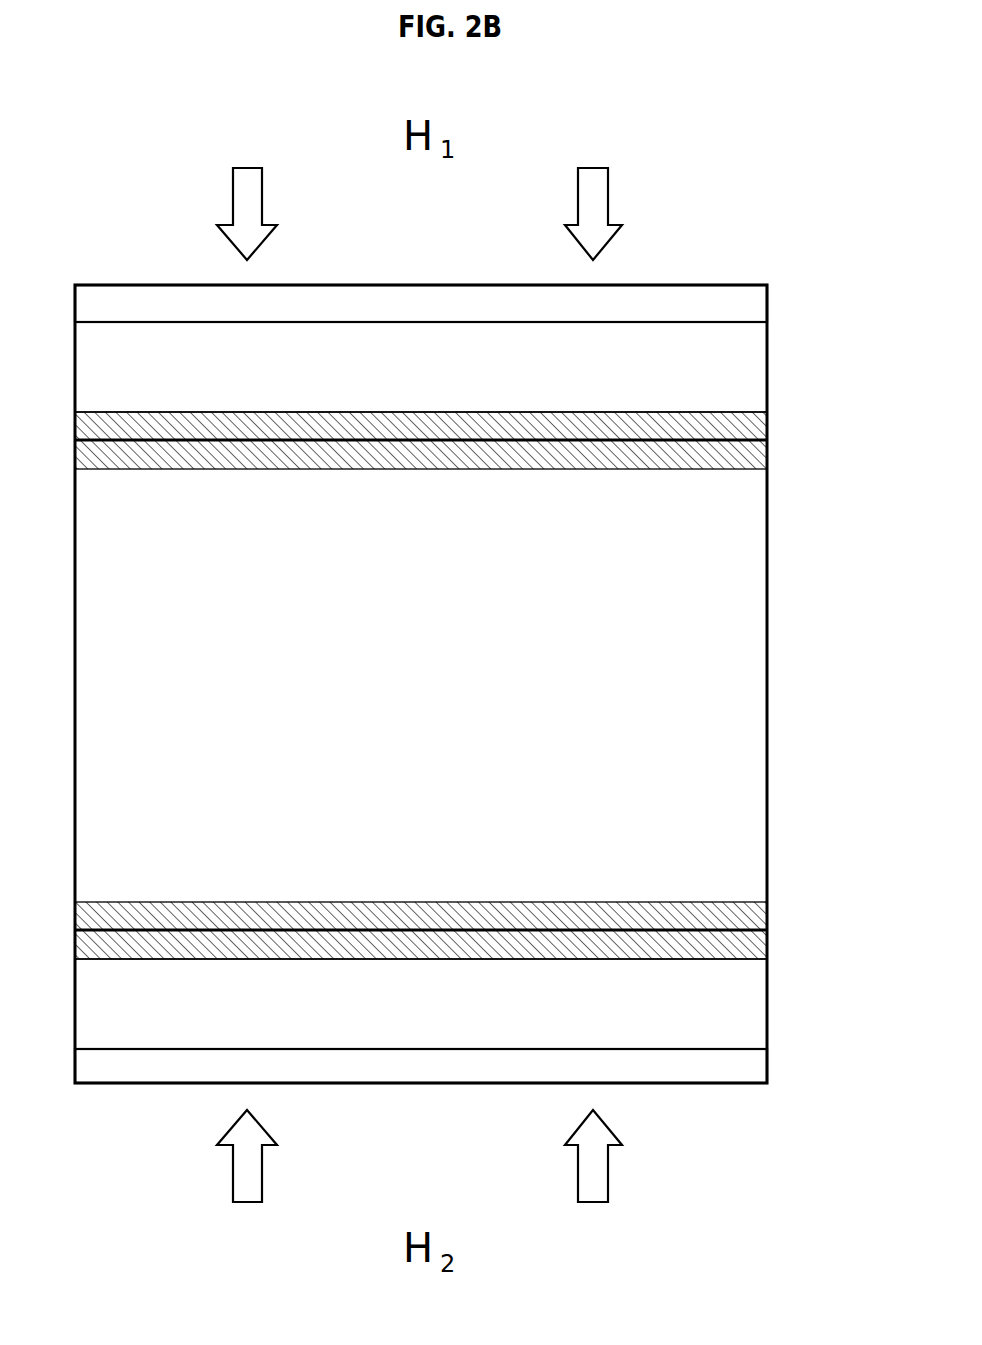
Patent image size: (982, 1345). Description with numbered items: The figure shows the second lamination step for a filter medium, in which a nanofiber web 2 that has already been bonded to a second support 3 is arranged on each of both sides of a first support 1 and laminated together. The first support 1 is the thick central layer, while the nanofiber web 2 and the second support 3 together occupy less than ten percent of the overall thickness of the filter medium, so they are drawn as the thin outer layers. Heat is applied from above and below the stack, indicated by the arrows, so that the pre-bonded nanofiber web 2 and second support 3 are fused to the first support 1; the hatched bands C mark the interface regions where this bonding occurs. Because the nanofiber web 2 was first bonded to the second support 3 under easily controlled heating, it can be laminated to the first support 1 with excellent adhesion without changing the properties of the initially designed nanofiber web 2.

The first support 1 is at (748, 686).
The nanofiber web 2 is at (748, 298).
The second support 3 is at (748, 370).
The hatched bonding layer C is at (760, 455).